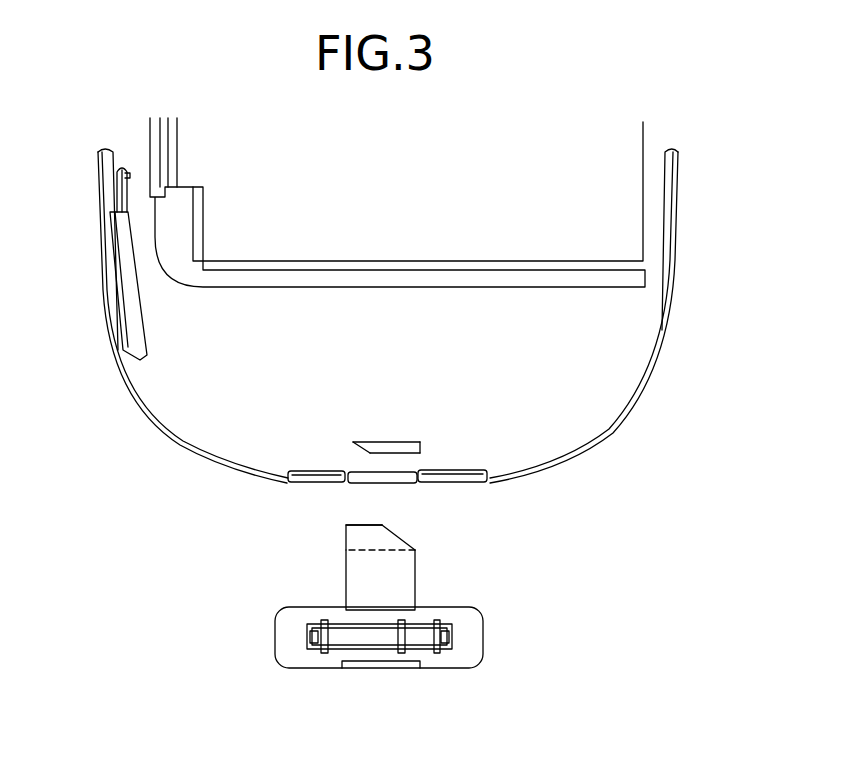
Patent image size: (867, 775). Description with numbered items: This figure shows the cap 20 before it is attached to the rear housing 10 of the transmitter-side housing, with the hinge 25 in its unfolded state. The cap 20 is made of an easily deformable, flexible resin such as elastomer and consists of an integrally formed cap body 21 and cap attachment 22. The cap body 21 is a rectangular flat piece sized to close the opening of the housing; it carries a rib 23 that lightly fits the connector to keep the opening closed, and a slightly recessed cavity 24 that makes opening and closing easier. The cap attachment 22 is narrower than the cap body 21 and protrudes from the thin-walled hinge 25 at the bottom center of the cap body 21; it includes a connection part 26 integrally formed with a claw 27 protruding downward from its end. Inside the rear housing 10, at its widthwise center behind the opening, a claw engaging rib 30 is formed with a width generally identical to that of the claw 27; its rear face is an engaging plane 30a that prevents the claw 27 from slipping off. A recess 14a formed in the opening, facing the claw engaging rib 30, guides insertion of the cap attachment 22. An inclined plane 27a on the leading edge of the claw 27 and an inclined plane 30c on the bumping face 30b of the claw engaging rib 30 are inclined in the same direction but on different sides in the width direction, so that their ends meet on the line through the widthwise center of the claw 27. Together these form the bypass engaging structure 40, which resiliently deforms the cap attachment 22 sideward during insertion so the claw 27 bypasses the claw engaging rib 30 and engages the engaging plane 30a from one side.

The rear housing 10 is at (618, 337).
The recess 14a is at (388, 485).
The cap 20 is at (416, 607).
The cap body 21 is at (474, 633).
The cap attachment 22 is at (388, 555).
The rib 23 is at (333, 646).
The cavity 24 is at (380, 663).
The hinge 25 is at (408, 612).
The connection part 26 is at (378, 584).
The claw 27 is at (378, 558).
The inclined plane 27a is at (403, 534).
The claw engaging rib 30 is at (410, 423).
The engaging plane 30a is at (420, 443).
The bumping face 30b is at (403, 458).
The inclined plane 30c is at (358, 449).
The bypass engaging structure 40 is at (399, 525).